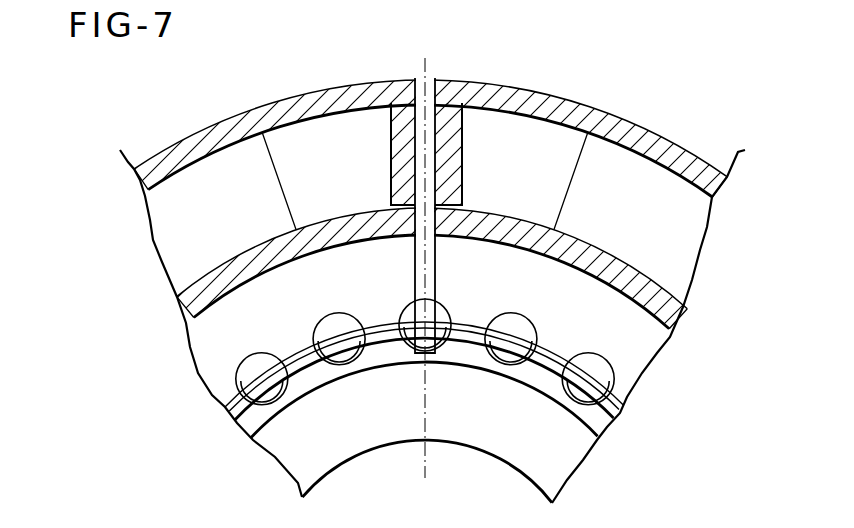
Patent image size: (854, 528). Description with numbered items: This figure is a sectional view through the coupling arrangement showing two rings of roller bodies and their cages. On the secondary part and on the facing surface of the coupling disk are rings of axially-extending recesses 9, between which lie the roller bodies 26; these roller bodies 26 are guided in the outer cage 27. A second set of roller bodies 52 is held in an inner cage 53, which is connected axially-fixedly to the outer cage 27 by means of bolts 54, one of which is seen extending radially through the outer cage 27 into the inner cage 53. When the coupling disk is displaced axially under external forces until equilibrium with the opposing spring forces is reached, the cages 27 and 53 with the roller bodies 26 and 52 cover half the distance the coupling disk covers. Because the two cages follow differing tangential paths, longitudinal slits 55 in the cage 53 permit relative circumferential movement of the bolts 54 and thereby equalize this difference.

The axially-extending recesses 9 is at (325, 149).
The roller bodies 26 is at (452, 129).
The cage 27 is at (635, 147).
The roller bodies 52 is at (252, 368).
The cage 53 is at (621, 413).
The bolts 54 is at (436, 272).
The longitudinal slits 55 is at (462, 342).